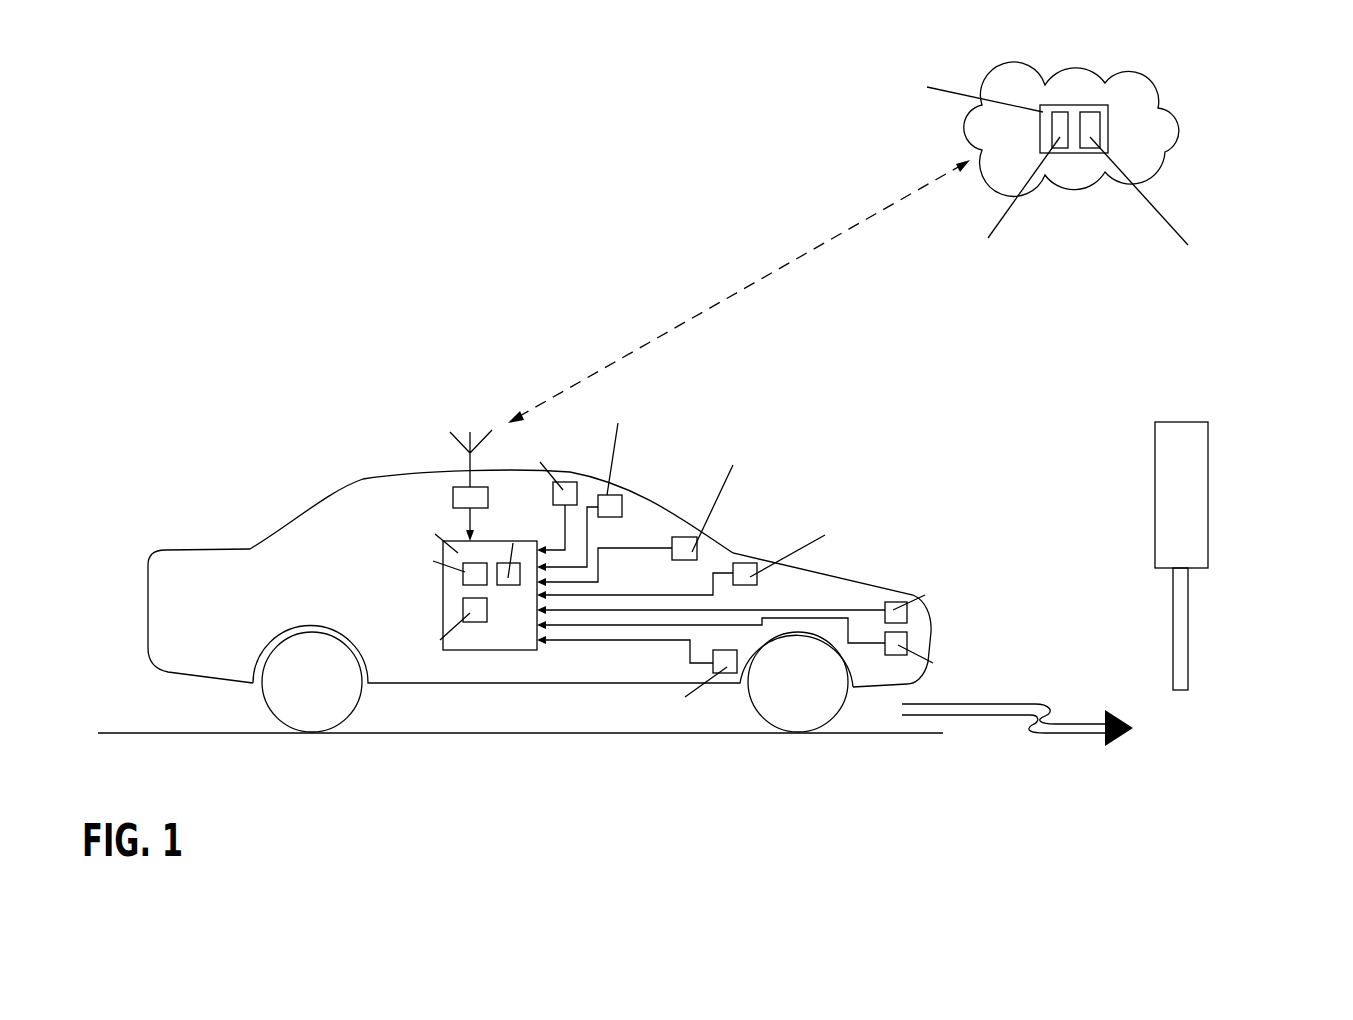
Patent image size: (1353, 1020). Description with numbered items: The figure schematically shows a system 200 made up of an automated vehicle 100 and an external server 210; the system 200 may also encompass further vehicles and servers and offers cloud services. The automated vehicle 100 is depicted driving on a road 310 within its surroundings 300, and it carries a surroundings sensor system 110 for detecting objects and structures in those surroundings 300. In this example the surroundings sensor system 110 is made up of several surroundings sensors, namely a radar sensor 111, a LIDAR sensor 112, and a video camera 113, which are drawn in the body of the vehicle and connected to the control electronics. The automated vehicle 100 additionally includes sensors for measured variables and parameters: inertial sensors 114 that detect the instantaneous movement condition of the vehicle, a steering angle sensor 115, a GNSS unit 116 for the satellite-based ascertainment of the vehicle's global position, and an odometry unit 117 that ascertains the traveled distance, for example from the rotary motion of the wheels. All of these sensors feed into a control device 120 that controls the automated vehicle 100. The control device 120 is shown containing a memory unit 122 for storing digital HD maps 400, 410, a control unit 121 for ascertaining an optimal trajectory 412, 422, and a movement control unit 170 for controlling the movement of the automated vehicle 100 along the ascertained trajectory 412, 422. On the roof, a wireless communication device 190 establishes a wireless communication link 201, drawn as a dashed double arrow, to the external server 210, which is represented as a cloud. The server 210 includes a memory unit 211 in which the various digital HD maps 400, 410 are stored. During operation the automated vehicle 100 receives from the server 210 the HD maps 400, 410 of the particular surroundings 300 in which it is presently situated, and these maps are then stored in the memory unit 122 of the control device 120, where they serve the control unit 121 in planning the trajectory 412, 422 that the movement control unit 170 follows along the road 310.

The automated vehicle 100 is at (205, 545).
The surroundings sensor system 110 is at (736, 420).
The radar sensor 111 is at (905, 637).
The LIDAR sensor 112 is at (896, 612).
The video camera 113 is at (613, 505).
The inertial sensors 114 is at (752, 575).
The steering angle sensor 115 is at (690, 545).
The GNSS unit 116 is at (556, 483).
The odometry unit 117 is at (722, 675).
The control device 120 is at (465, 637).
The control unit 121 is at (508, 582).
The memory unit 122 is at (463, 573).
The movement control unit 170 is at (463, 610).
The wireless communication device 190 is at (453, 497).
The system 200 is at (210, 258).
The wireless communication link 201 is at (753, 283).
The external server 210 is at (1148, 88).
The memory unit 211 is at (1073, 135).
The surroundings 300 is at (1098, 512).
The road 310 is at (120, 733).
The HD map 400 is at (1058, 138).
The HD map 410 is at (1093, 140).
The trajectory 412 is at (1017, 757).
The trajectory 422 is at (983, 710).